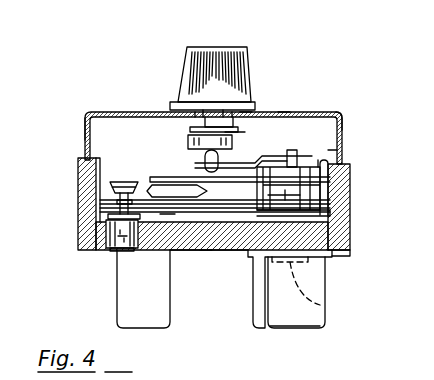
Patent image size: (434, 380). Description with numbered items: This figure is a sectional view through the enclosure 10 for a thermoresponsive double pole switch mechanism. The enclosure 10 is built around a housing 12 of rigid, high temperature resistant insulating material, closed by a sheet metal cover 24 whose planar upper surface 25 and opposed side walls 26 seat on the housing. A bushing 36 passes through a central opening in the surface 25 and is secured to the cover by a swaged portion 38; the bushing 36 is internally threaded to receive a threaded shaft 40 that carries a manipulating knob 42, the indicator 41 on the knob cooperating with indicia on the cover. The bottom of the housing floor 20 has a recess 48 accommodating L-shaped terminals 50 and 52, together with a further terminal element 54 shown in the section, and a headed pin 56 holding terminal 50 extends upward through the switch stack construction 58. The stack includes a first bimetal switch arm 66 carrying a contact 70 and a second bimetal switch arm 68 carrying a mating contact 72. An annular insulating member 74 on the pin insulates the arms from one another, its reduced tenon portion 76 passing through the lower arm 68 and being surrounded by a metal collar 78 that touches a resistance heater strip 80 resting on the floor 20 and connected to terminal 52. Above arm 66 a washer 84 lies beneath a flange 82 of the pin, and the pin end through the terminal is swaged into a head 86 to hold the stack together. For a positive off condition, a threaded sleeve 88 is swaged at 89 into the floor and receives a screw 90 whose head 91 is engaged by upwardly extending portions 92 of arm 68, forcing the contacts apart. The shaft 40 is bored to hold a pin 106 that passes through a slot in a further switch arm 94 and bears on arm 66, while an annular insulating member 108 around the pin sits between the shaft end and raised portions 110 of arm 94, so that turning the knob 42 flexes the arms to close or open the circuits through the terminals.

The enclosure 10 is at (110, 92).
The housing 12 is at (352, 230).
The floor 20 is at (214, 252).
The cover 24 is at (350, 111).
The planar upper surface 25 is at (283, 115).
The side walls 26 is at (86, 118).
The bushing 36 is at (228, 113).
The swaged portion 38 is at (190, 118).
The threaded shaft 40 is at (247, 114).
The indicator 41 is at (171, 104).
The manipulating knob 42 is at (249, 80).
The recess 48 is at (340, 252).
The terminal 50 is at (256, 306).
The terminal 52 is at (118, 322).
The terminal tab bottom 54 is at (282, 325).
The headed shaft or pin 56 is at (328, 313).
The switch stack construction 58 is at (330, 166).
The first switch arm 66 is at (245, 170).
The second switch arm 68 is at (204, 251).
The contact 70 is at (190, 193).
The contact 72 is at (150, 197).
The annular member 74 is at (322, 183).
The tenon portion 76 is at (350, 211).
The metal collar 78 is at (330, 197).
The resistance heater strip 80 is at (165, 216).
The flange 82 is at (320, 160).
The washer 84 is at (344, 150).
The head 86 is at (306, 260).
The sleeve or bushing 88 is at (106, 236).
The swaged end 89 is at (110, 252).
The screw 90 is at (120, 216).
The head 91 is at (112, 186).
The upwardly extending portions 92 is at (117, 202).
The switch arm 94 is at (187, 147).
The pin 106 is at (262, 64).
The annular member 108 is at (240, 130).
The raised portions 110 is at (196, 194).